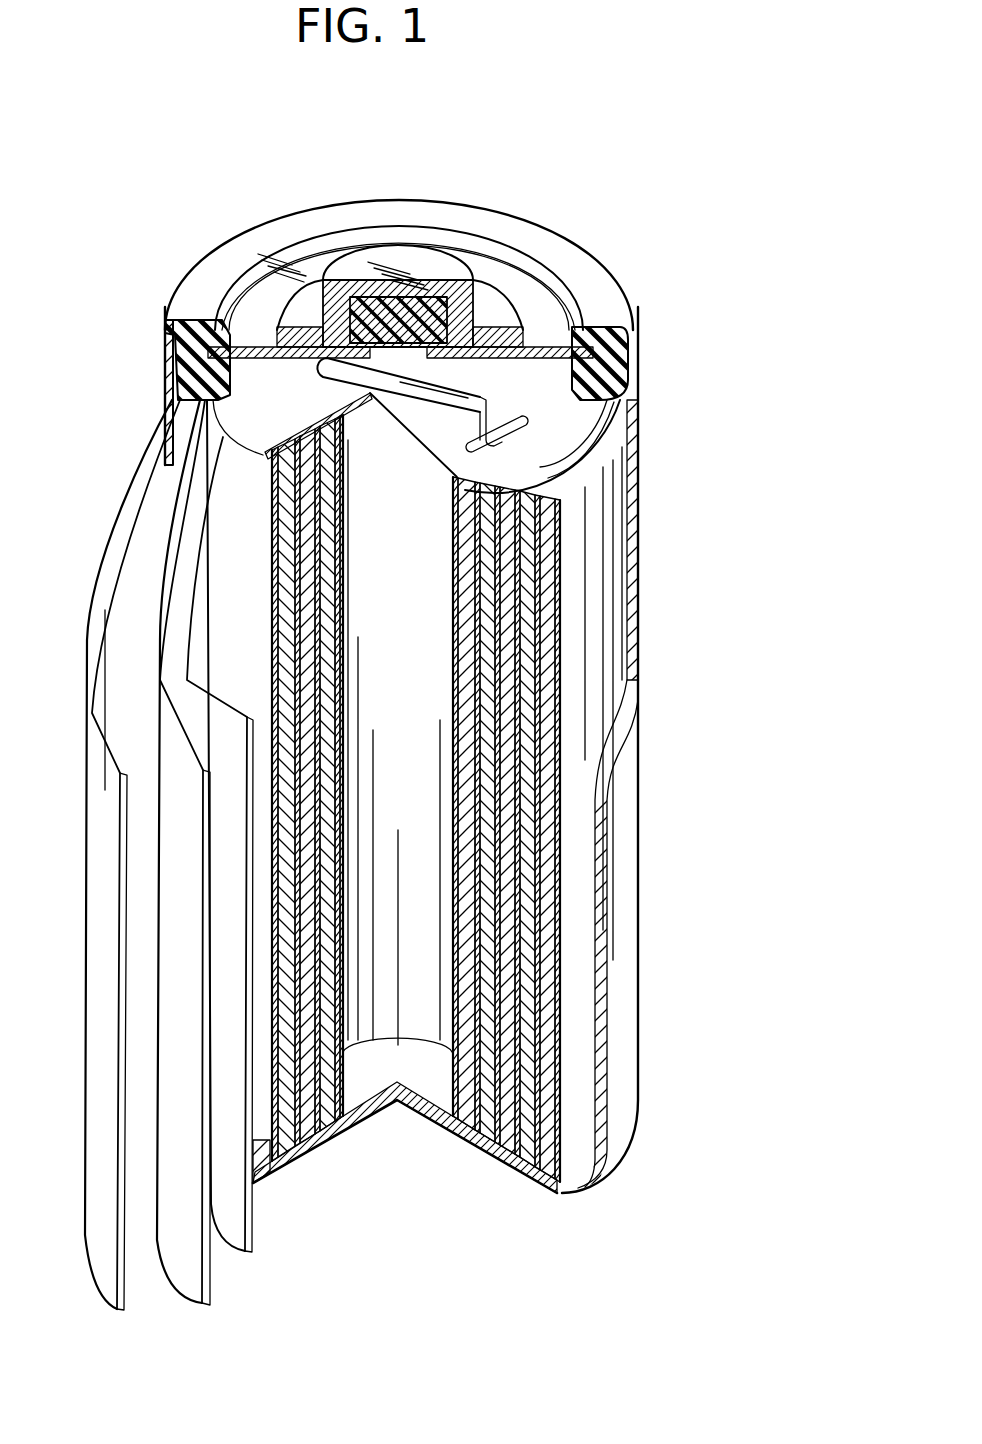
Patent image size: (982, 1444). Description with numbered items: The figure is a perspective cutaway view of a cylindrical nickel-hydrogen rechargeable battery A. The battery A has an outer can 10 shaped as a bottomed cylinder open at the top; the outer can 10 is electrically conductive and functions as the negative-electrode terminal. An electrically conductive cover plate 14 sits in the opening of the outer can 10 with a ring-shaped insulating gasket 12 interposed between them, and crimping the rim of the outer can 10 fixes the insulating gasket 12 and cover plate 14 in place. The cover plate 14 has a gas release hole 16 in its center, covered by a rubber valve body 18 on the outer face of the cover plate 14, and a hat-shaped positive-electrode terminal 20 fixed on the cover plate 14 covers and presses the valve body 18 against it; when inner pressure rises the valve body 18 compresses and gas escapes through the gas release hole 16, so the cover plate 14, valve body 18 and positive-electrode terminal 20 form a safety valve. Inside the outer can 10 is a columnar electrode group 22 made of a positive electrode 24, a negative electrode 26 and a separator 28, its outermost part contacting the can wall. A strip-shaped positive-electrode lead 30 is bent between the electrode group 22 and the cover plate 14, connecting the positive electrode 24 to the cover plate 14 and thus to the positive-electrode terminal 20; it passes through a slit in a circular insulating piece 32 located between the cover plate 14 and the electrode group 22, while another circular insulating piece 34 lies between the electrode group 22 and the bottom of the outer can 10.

The battery A is at (624, 218).
The outer can 10 is at (617, 745).
The insulating gasket 12 is at (168, 360).
The cover plate 14 is at (575, 297).
The gas release hole 16 is at (600, 350).
The valve body 18 is at (372, 310).
The positive-electrode terminal 20 is at (423, 252).
The electrode group 22 is at (605, 618).
The positive electrode 24 is at (255, 1240).
The negative electrode 26 is at (128, 1293).
The separator 28 is at (213, 1285).
The positive-electrode lead 30 is at (520, 403).
The insulating piece 32 is at (555, 440).
The insulating piece 34 is at (421, 1077).